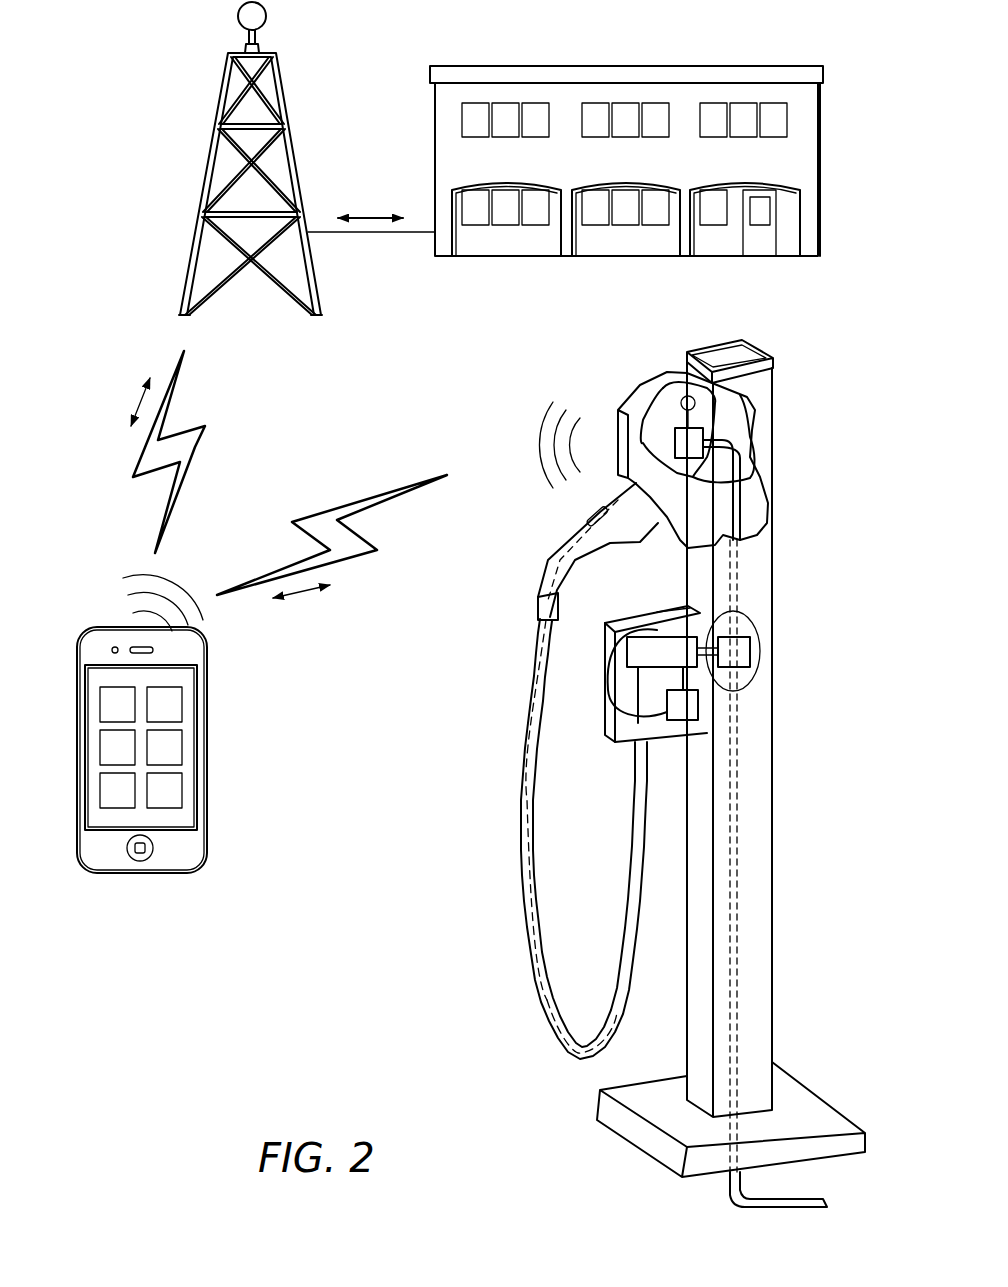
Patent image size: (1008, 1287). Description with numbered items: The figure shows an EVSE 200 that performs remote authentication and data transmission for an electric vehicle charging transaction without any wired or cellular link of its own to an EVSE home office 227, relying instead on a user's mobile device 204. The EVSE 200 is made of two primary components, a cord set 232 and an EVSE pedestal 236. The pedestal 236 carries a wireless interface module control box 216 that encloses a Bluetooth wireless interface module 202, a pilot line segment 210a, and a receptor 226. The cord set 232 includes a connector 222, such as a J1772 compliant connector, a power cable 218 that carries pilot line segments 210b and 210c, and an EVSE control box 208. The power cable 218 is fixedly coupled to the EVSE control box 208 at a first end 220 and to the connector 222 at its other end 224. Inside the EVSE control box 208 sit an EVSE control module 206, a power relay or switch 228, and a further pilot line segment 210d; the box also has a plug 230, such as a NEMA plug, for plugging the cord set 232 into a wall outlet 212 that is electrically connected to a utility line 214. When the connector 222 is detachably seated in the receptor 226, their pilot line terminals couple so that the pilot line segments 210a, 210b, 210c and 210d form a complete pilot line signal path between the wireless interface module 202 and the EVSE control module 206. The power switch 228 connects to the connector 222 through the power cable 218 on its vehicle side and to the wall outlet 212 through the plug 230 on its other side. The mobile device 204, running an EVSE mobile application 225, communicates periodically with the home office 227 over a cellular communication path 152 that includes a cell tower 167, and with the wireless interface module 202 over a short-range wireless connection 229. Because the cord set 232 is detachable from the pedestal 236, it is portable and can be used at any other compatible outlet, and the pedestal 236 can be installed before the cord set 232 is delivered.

The cell tower 167 is at (283, 90).
The EVSE home office 227 is at (520, 248).
The cellular communication path 152 is at (197, 445).
The short-range wireless connection 229 is at (320, 515).
The mobile device 204 is at (181, 752).
The EVSE mobile application 225 is at (172, 703).
The EVSE 200 is at (448, 834).
The utility line 214 is at (737, 943).
The EVSE pedestal 236 is at (768, 348).
The wireless interface module control box 216 is at (638, 390).
The receptor 226 is at (655, 505).
The wireless interface module 202 is at (697, 437).
The pilot line segment 210a is at (700, 478).
The pilot line segment 210b is at (567, 560).
The connector 222 is at (583, 520).
The other end 224 is at (545, 608).
The power cable 218 is at (525, 938).
The pilot line segment 210c is at (527, 780).
The cord set 232 is at (534, 1014).
The EVSE control box 208 is at (605, 645).
The first end 220 is at (599, 746).
The power relay 228 is at (660, 647).
The plug 230 is at (720, 645).
The wall outlet 212 is at (707, 662).
The EVSE control module 206 is at (690, 705).
The pilot line segment 210d is at (660, 718).